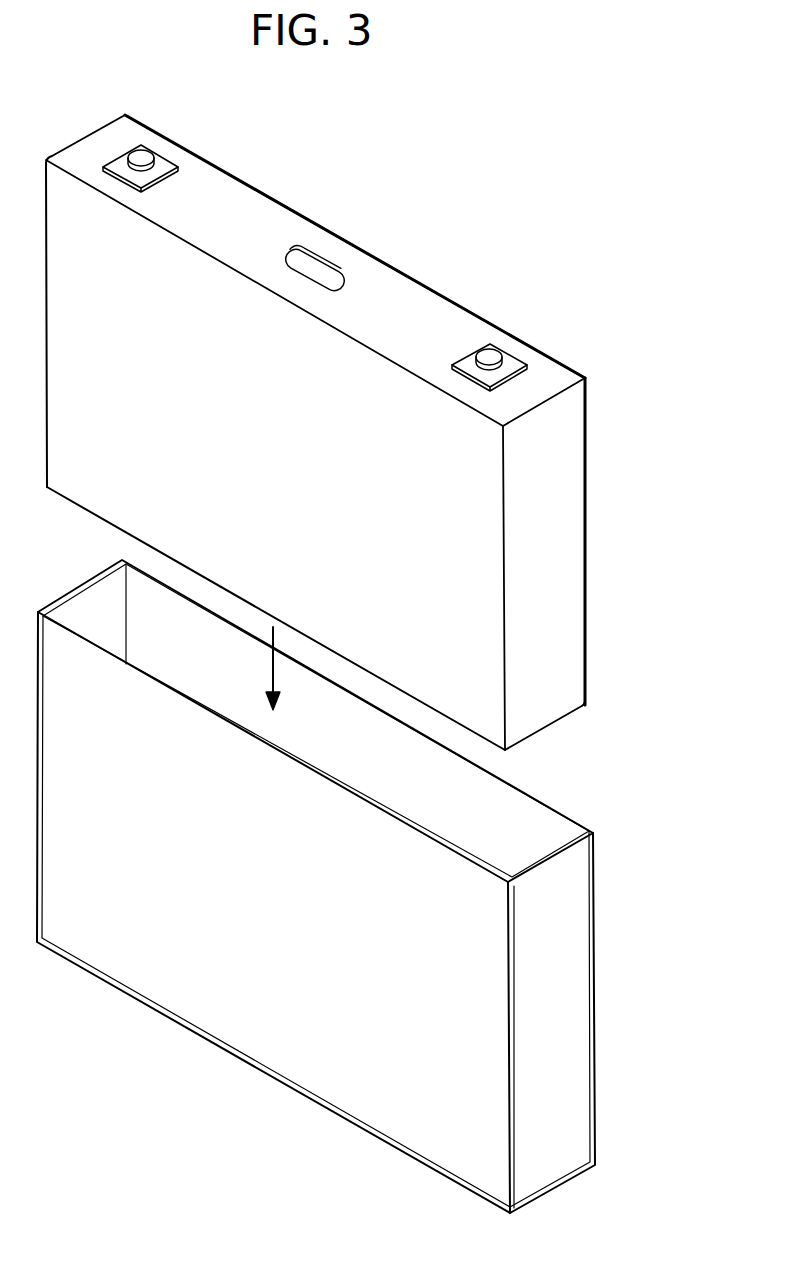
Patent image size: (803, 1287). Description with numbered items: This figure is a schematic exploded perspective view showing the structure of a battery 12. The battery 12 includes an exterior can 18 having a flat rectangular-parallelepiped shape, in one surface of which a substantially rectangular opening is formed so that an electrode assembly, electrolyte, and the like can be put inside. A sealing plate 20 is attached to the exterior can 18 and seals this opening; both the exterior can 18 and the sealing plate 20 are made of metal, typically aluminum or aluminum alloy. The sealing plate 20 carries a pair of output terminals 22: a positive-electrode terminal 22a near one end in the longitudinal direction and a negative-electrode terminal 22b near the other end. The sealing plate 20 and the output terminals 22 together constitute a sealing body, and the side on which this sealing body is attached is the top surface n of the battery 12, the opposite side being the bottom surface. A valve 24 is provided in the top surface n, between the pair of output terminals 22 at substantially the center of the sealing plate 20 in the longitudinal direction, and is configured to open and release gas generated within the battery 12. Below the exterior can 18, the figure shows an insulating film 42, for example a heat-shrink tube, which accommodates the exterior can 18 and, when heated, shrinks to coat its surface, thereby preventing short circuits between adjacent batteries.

The battery 12 is at (298, 1224).
The exterior can 18 is at (355, 411).
The sealing plate 20 is at (557, 383).
The output terminals 22 is at (357, 231).
The positive-electrode terminal 22a is at (488, 347).
The negative-electrode terminal 22b is at (143, 146).
The valve 24 is at (313, 276).
The insulating film 42 is at (567, 1016).
The top surface n is at (242, 212).